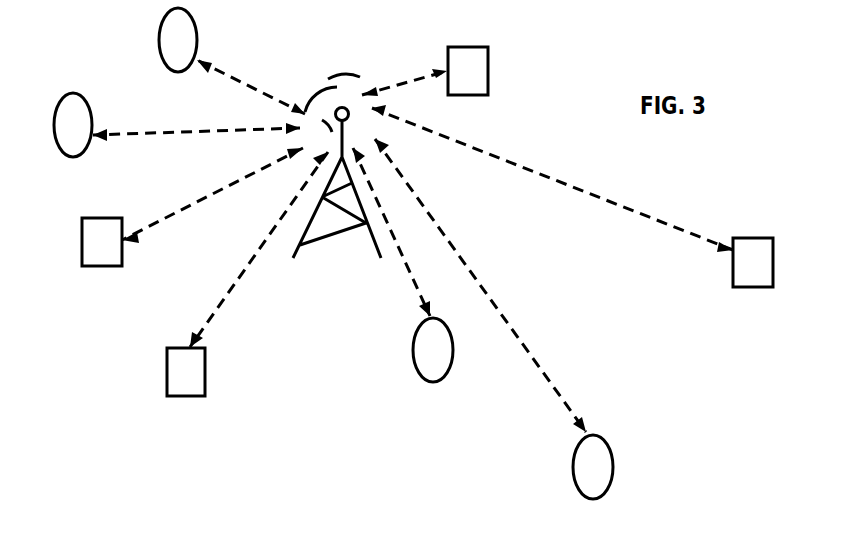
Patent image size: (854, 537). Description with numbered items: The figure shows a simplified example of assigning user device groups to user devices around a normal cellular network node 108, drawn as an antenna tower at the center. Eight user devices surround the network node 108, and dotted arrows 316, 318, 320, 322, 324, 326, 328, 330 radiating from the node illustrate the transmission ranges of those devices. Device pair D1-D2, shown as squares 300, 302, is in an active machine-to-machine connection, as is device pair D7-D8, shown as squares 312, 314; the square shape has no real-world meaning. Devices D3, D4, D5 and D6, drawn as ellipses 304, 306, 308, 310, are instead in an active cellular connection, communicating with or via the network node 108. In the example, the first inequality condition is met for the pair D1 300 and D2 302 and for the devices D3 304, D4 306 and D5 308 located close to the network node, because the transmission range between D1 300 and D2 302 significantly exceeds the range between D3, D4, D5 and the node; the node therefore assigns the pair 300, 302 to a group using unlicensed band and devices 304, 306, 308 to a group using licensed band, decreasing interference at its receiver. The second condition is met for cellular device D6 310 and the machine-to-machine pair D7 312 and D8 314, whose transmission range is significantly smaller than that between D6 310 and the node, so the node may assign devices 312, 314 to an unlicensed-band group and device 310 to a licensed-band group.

The network node 108 is at (301, 251).
The device D1 300 is at (488, 53).
The device D2 302 is at (773, 257).
The device D3 304 is at (160, 34).
The device D4 306 is at (57, 119).
The device D5 308 is at (453, 362).
The device D6 310 is at (613, 466).
The device D7 312 is at (82, 240).
The device D8 314 is at (205, 370).
The dotted arrow 316 is at (418, 73).
The dotted arrow 318 is at (492, 156).
The dotted arrow 320 is at (465, 254).
The dotted arrow 322 is at (412, 277).
The dotted arrow 324 is at (232, 285).
The dotted arrow 326 is at (177, 218).
The dotted arrow 328 is at (138, 133).
The dotted arrow 330 is at (242, 83).